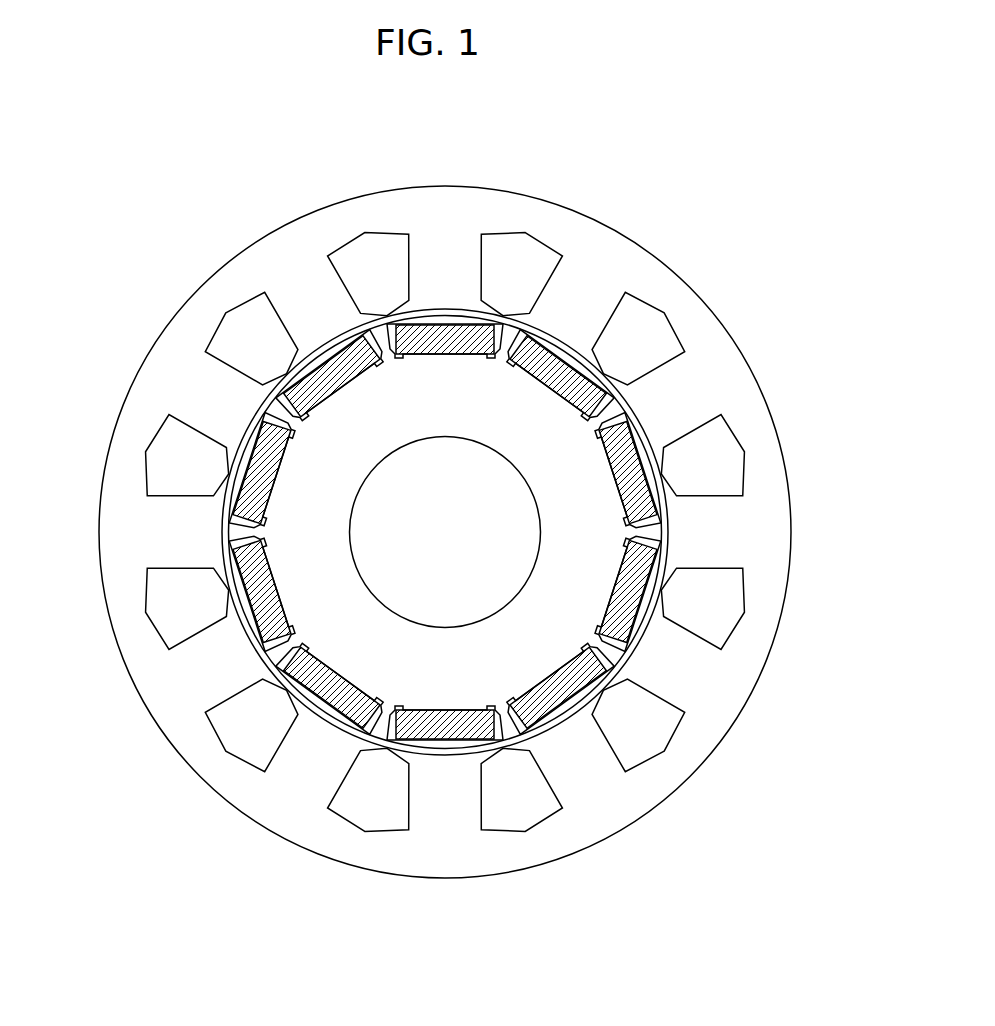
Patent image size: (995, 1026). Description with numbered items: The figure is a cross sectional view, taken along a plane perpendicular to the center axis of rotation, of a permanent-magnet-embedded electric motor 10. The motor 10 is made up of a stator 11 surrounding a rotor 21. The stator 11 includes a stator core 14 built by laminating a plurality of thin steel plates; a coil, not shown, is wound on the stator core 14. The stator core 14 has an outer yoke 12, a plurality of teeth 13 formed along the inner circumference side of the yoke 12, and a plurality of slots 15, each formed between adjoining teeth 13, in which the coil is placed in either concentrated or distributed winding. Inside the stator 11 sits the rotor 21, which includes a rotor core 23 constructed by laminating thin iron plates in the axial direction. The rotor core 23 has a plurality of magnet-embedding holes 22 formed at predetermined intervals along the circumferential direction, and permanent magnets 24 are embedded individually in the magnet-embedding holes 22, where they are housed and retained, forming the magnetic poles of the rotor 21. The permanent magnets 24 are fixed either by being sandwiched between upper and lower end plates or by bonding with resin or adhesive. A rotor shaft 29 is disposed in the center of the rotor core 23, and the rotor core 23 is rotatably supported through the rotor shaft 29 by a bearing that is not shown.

The permanent-magnet-embedded electric motor 10 is at (693, 192).
The stator 11 is at (290, 282).
The yoke 12 is at (158, 372).
The teeth 13 is at (170, 540).
The stator core 14 is at (172, 700).
The slots 15 is at (247, 332).
The rotor 21 is at (590, 590).
The magnet-embedding holes 22 is at (655, 522).
The rotor core 23 is at (535, 407).
The permanent magnets 24 is at (628, 467).
The rotor shaft 29 is at (508, 523).